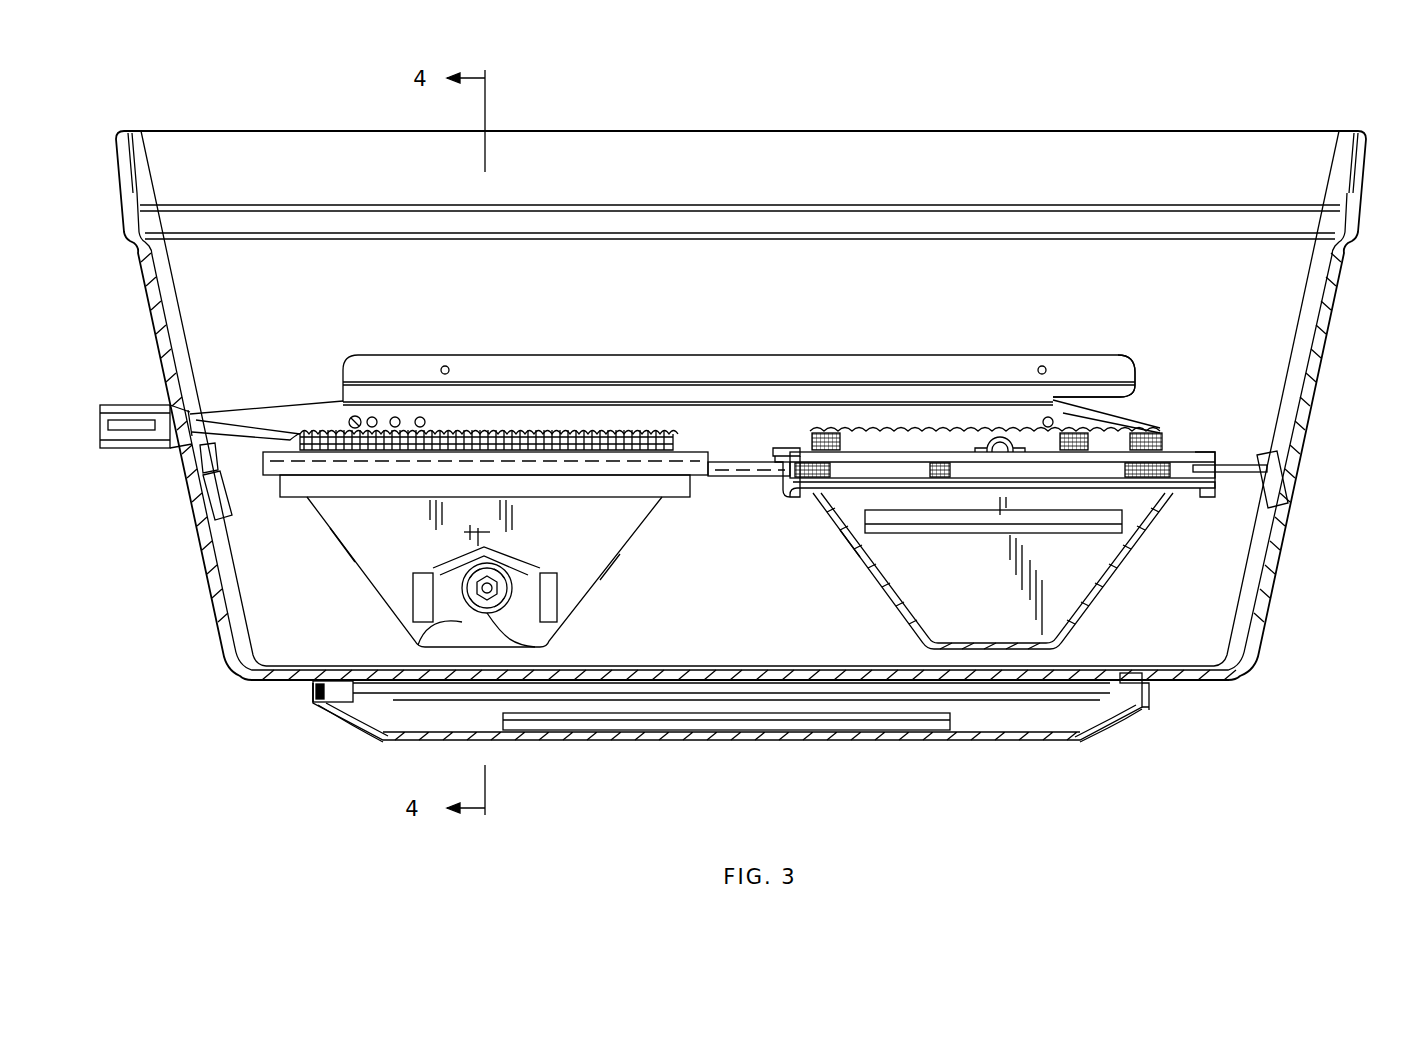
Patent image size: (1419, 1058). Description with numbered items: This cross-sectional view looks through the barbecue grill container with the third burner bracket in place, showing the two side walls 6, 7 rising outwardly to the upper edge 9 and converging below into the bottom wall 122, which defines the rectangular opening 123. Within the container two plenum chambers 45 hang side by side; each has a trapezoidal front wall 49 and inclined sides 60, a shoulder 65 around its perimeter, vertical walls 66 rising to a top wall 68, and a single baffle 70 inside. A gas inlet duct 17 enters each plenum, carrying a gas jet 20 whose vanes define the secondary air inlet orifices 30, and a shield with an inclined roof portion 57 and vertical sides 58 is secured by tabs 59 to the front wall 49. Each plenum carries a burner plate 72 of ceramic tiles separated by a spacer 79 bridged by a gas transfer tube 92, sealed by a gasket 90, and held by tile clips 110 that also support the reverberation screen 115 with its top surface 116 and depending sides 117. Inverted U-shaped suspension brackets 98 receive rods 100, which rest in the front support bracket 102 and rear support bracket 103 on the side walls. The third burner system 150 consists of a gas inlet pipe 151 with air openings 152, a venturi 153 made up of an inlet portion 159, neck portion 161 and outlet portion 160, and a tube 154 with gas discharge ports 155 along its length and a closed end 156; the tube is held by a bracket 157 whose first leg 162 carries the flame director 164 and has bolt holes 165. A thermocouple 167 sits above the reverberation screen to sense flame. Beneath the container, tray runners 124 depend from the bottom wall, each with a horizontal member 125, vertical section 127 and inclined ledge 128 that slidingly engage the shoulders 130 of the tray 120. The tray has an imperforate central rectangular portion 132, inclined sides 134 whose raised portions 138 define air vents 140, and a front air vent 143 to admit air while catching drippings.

The upper edge 9 is at (1364, 134).
The side wall 6 is at (1330, 300).
The side wall 7 is at (158, 322).
The gas inlet pipe 151 is at (106, 403).
The air openings 152 is at (118, 432).
The burner plate 72 is at (198, 443).
The front support bracket 102 is at (232, 497).
The inlet portion 159 is at (190, 410).
The outlet portion 160 is at (260, 403).
The neck portion 161 is at (195, 418).
The venturi 153 is at (280, 401).
The tube 154 is at (739, 344).
The bracket 157 is at (617, 382).
The first leg 162 is at (1120, 358).
The flame director 164 is at (1168, 398).
The bolt holes 165 is at (1042, 366).
The third burner system 150 is at (1158, 420).
The thermocouple 167 is at (354, 418).
The gas discharge ports 155 is at (421, 418).
The reverberation screen 115 is at (700, 450).
The spacer 79 is at (722, 452).
The rod 100 is at (725, 478).
The suspension bracket 98 is at (752, 460).
The tile clip 110 is at (801, 448).
The gasket 90 is at (783, 478).
The sides 117 is at (1170, 450).
The end 156 is at (1162, 438).
The top surface 116 is at (918, 428).
The gas transfer tube 92 is at (968, 432).
The top wall 68 is at (1210, 456).
The vertical wall 66 is at (1200, 485).
The plenum chamber 45 is at (636, 545).
The inclined sides 60 is at (385, 612).
The front wall 49 is at (460, 588).
The roof portion 57 is at (520, 560).
The tabs 59 is at (560, 585).
The gas inlet duct 17 is at (470, 572).
The secondary air inlet orifices 30 is at (497, 606).
The sides 58 is at (448, 640).
The gas jet 20 is at (490, 620).
The shoulder 65 is at (1181, 498).
The baffle 70 is at (1088, 535).
The rear support bracket 103 is at (1257, 505).
The opening 123 is at (1085, 670).
The bottom wall 122 is at (1215, 680).
The horizontal member 125 is at (335, 683).
The tray runner 124 is at (312, 698).
The vertical section 127 is at (317, 705).
The shoulders 130 is at (330, 715).
The inclined ledge 128 is at (333, 720).
The air vents 140 is at (352, 730).
The inclined sides 134 is at (370, 738).
The tray 120 is at (1033, 740).
The central rectangular portion 132 is at (970, 742).
The raised portions 138 is at (365, 707).
The front air vent 143 is at (605, 728).